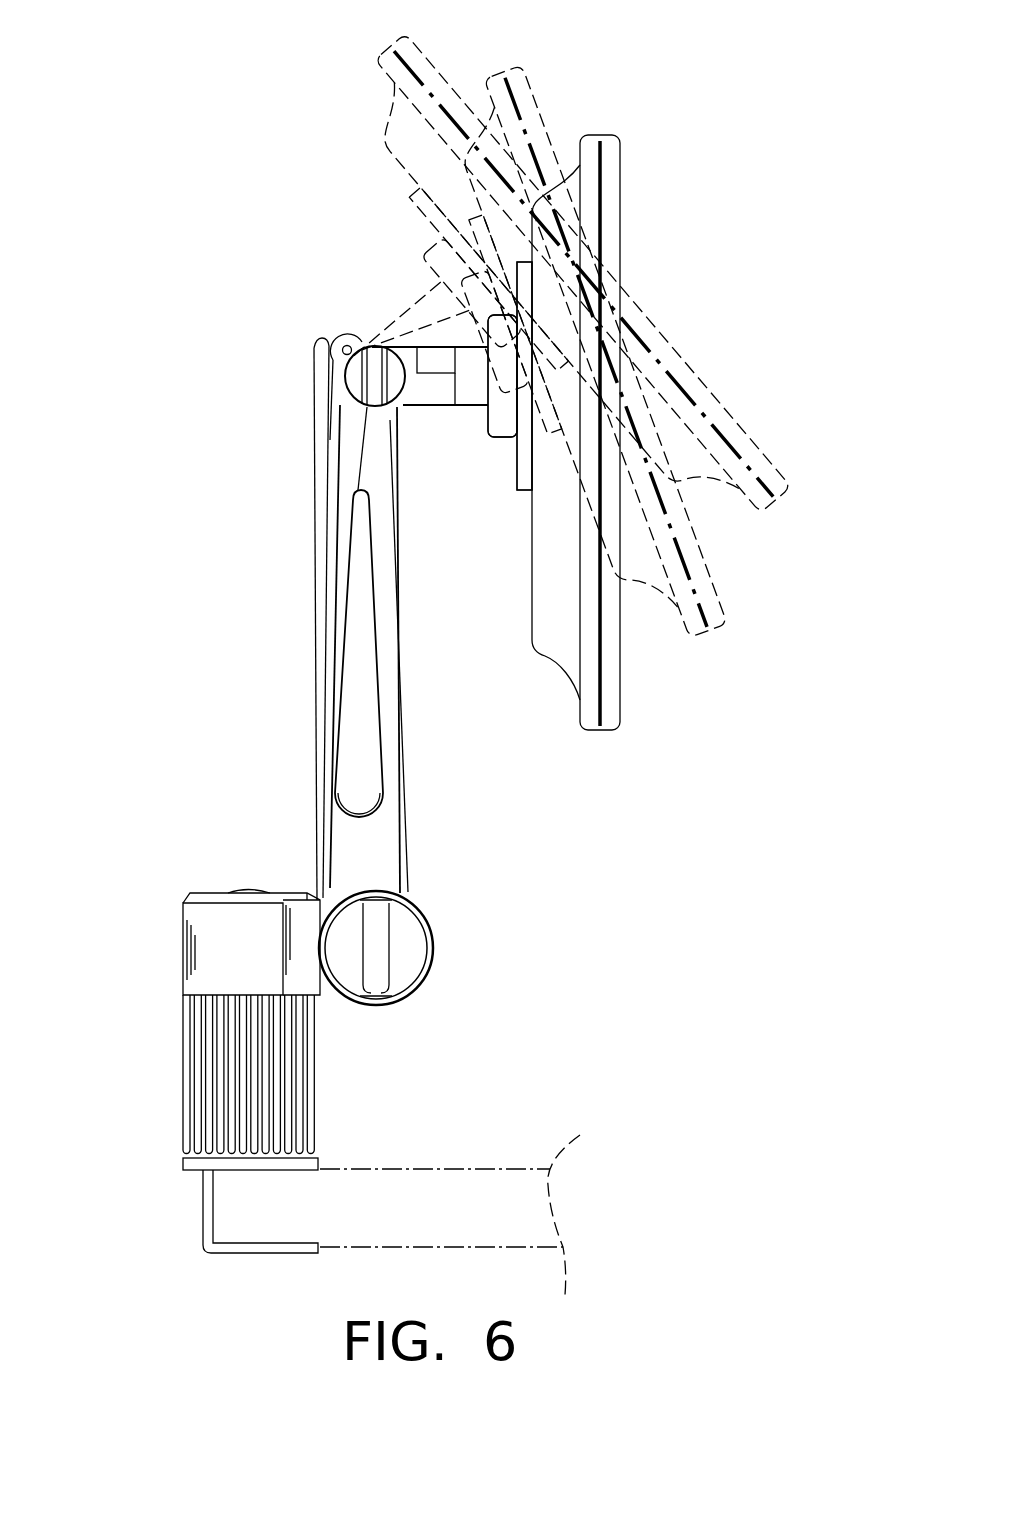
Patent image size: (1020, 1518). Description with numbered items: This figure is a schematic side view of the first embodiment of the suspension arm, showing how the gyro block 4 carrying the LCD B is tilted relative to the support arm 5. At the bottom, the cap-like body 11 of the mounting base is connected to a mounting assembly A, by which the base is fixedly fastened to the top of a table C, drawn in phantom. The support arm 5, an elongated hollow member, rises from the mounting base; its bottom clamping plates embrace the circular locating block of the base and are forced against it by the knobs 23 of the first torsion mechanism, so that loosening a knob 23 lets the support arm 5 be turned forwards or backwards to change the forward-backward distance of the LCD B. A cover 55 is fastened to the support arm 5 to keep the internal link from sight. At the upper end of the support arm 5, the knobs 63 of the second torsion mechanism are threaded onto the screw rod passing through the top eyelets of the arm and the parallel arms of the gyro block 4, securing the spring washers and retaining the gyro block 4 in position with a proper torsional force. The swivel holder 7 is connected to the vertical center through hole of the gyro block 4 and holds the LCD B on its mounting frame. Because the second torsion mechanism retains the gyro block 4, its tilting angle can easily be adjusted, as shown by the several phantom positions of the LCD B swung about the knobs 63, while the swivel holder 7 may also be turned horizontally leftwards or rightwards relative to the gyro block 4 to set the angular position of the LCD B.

The LCD B is at (420, 58).
The gyro block 4 is at (433, 398).
The swivel holder 7 is at (472, 393).
The knob 63 is at (356, 392).
The cover 55 is at (342, 478).
The support arm 5 is at (388, 703).
The knob 23 is at (408, 943).
The cap-like body 11 is at (205, 950).
The mounting assembly A is at (302, 1080).
The table C is at (483, 1190).